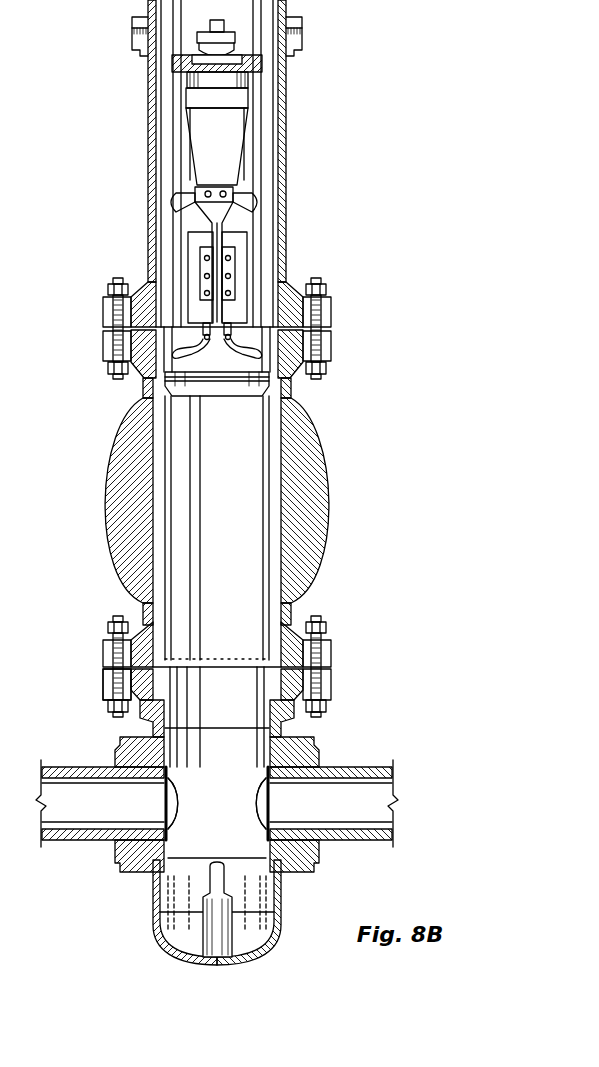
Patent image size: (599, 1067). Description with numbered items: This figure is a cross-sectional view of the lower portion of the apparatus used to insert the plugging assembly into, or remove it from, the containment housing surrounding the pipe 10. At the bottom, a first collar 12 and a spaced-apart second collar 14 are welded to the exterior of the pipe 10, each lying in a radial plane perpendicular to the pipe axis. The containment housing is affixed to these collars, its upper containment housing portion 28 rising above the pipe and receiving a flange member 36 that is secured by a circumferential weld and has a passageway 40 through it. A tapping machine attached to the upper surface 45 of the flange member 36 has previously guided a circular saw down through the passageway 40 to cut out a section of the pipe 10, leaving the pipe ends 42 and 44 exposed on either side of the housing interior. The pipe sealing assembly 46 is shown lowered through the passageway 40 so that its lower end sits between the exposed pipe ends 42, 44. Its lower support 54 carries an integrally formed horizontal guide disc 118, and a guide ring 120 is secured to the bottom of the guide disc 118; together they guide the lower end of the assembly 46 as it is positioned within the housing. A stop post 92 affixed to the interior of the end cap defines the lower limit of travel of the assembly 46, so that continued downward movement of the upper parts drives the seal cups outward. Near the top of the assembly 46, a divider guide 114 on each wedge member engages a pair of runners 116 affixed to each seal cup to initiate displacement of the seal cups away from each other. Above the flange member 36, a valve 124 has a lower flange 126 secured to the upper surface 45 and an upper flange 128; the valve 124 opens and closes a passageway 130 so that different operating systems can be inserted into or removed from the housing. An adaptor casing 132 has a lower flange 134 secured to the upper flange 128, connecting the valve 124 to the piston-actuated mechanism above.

The pipe 10 is at (65, 766).
The first collar 12 is at (113, 753).
The second collar 14 is at (320, 862).
The upper containment housing portion 28 is at (318, 736).
The flange member 36 is at (333, 690).
The passageway 40 is at (168, 703).
The pipe end 42 is at (170, 820).
The pipe end 44 is at (263, 827).
The upper surface of flange member 45 is at (333, 656).
The pipe sealing assembly 46 is at (258, 128).
The lower support 54 is at (255, 340).
The stop post 92 is at (215, 915).
The divider guide 114 is at (210, 200).
The runners 116 is at (208, 244).
The guide disc 118 is at (267, 378).
The guide ring 120 is at (228, 398).
The valve 124 is at (318, 503).
The lower flange 126 is at (326, 644).
The upper flange 128 is at (332, 340).
The passageway 130 is at (152, 558).
The adaptor casing 132 is at (288, 150).
The lower flange of adaptor casing 134 is at (332, 303).